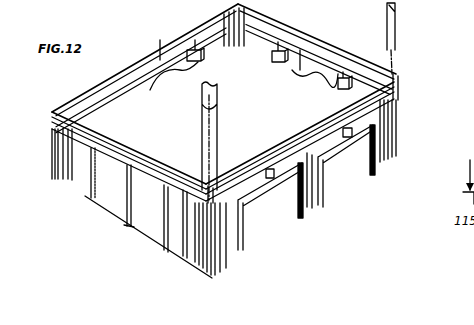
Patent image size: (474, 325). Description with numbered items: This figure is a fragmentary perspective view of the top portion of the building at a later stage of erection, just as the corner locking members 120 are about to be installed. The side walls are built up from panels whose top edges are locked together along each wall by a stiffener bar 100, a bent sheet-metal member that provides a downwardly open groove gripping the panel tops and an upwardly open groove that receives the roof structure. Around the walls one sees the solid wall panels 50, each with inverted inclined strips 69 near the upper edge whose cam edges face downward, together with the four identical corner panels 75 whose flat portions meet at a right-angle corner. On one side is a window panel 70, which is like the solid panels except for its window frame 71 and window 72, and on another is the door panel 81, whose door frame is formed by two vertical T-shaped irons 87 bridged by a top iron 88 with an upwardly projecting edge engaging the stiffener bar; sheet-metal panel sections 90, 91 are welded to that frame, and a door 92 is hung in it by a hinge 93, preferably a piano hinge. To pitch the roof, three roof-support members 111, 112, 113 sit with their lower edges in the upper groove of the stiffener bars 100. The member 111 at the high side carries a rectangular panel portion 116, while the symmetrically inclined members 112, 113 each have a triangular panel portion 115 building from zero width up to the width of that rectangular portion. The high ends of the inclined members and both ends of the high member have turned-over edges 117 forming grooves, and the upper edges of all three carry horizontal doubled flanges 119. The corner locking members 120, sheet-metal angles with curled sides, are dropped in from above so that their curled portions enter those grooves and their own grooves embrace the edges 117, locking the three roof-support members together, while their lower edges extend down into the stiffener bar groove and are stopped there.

The stiffener bar 100 is at (157, 50).
The roof-support member 113 is at (345, 47).
The triangular panel portion 115 is at (199, 181).
The roof-support member 111 is at (300, 126).
The rectangular panel portion 116 is at (300, 150).
The roof-support member 112 is at (157, 156).
The horizontal doubled flanges 119 is at (396, 60).
The turned-over edges 117 is at (399, 89).
The corner locking member 120 is at (396, 18).
The corner panel 75 is at (51, 164).
The panel section 90 is at (72, 176).
The inclined strip 69 is at (199, 61).
The solid wall panel 50 is at (151, 86).
The hinge 93 is at (97, 172).
The top iron 88 is at (134, 190).
The vertical T-shaped iron 87 is at (90, 196).
The door 92 is at (135, 226).
The door panel 81 is at (163, 272).
The panel section 91 is at (186, 266).
The window panel 70 is at (320, 204).
The window frame 71 is at (318, 201).
The window 72 is at (346, 183).